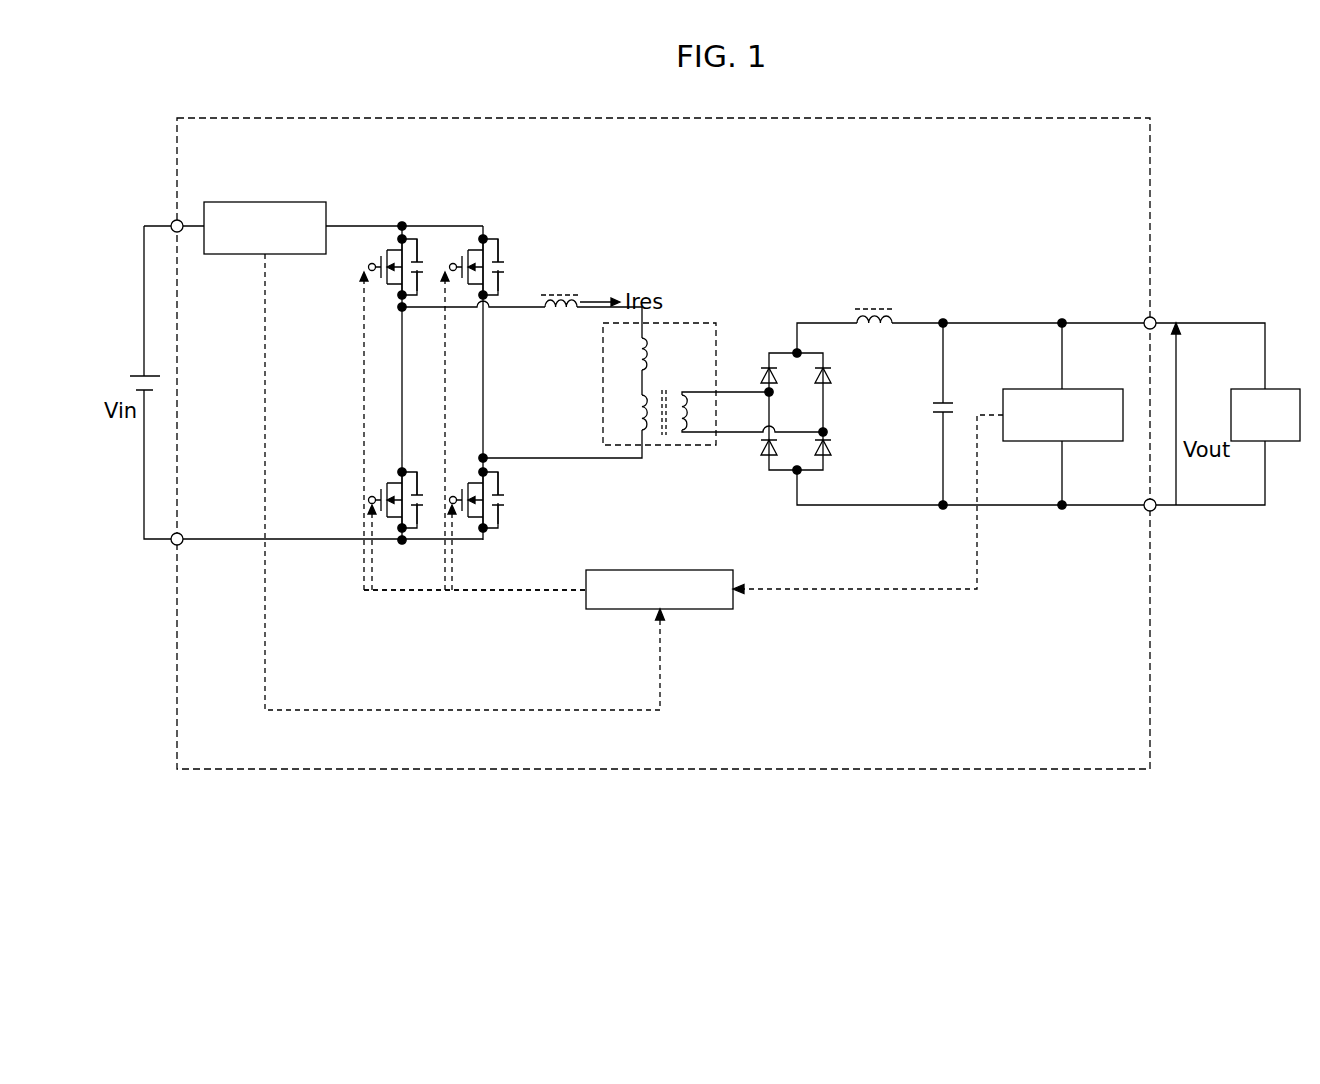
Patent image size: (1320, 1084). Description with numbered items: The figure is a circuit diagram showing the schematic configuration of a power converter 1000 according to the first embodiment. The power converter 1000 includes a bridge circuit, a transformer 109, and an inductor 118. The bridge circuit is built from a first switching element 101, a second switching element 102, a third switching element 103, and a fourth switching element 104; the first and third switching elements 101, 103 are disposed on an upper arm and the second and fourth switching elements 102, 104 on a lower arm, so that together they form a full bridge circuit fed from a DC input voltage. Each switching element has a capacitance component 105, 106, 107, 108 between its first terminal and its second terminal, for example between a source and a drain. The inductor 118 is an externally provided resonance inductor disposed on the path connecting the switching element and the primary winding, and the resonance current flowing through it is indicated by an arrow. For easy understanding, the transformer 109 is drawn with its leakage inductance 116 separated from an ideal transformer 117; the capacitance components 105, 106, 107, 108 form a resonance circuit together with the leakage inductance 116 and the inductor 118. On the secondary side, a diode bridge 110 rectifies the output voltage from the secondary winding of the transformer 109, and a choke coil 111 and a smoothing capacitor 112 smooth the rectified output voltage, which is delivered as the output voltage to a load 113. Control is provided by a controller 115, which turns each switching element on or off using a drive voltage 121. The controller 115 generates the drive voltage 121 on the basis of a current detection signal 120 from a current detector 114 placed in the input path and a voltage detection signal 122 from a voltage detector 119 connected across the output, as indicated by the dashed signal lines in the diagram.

The power converter 1000 is at (900, 771).
The first switching element 101 is at (385, 252).
The second switching element 102 is at (392, 517).
The third switching element 103 is at (466, 252).
The fourth switching element 104 is at (462, 517).
The capacitance component 105 is at (423, 262).
The capacitance component 106 is at (422, 500).
The capacitance component 107 is at (505, 262).
The capacitance component 108 is at (508, 500).
The transformer 109 is at (687, 348).
The diode bridge 110 is at (784, 348).
The choke coil 111 is at (877, 340).
The smoothing capacitor 112 is at (935, 410).
The load 113 is at (1275, 389).
The current detector 114 is at (213, 202).
The controller 115 is at (703, 612).
The leakage inductance 116 is at (637, 354).
The ideal transformer 117 is at (637, 412).
The inductor 118 is at (543, 316).
The voltage detector 119 is at (1085, 389).
The current detection signal 120 is at (440, 712).
The drive voltage 121 is at (519, 595).
The voltage detection signal 122 is at (830, 595).